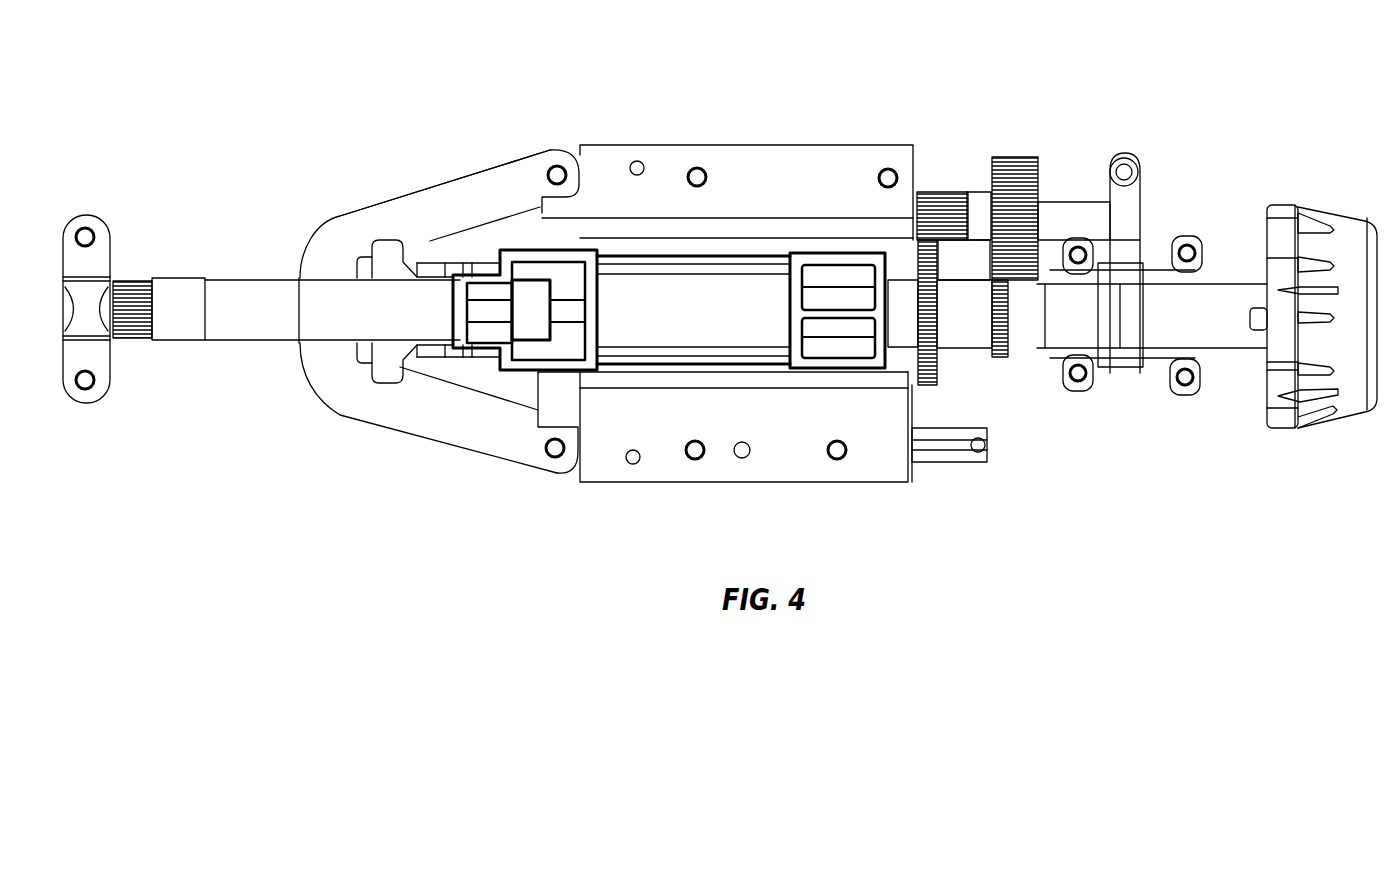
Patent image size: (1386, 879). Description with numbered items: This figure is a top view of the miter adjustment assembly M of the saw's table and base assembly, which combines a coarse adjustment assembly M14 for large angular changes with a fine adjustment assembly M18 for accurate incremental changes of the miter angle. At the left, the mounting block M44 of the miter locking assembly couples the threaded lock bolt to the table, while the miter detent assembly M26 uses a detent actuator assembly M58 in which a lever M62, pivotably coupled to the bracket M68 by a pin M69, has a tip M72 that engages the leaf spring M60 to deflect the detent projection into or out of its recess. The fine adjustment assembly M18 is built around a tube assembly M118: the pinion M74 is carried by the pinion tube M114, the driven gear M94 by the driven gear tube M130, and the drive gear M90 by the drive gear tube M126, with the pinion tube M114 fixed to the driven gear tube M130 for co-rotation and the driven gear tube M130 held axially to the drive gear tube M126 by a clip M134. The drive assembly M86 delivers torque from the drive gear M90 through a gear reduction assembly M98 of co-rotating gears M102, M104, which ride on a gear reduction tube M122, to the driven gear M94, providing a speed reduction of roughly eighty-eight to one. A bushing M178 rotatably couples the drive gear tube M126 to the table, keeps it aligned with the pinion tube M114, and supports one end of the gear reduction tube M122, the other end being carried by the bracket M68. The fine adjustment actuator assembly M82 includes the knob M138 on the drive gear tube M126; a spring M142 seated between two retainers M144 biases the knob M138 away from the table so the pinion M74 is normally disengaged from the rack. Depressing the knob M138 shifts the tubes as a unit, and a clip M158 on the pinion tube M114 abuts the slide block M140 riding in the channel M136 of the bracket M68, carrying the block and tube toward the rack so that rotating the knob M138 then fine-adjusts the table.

The miter adjustment assembly M is at (1122, 38).
The mounting block M44 is at (95, 258).
The pinion M74 is at (165, 332).
The pinion tube M114 is at (270, 280).
The tube assembly M118 is at (270, 360).
The miter detent assembly M26 is at (350, 430).
The detent actuator assembly M58 is at (487, 248).
The leaf spring M60 is at (407, 187).
The lever M62 is at (457, 238).
The tip M72 is at (378, 380).
The coarse adjustment assembly M14 is at (508, 480).
The pin M69 is at (690, 272).
The bracket M68 is at (713, 483).
The slide block M140 is at (762, 340).
The channel M136 is at (615, 374).
The clip M158 is at (900, 262).
The co-rotating gear M104 is at (940, 192).
The driven gear M94 is at (930, 388).
The gear reduction assembly M98 is at (975, 130).
The drive assembly M86 is at (1018, 123).
The co-rotating gear M102 is at (1033, 157).
The drive gear M90 is at (1000, 350).
The driven gear tube M130 is at (975, 365).
The gear reduction tube M122 is at (1073, 203).
The bushing M178 is at (1128, 217).
The drive gear tube M126 is at (1240, 293).
The clip M134 is at (1037, 362).
The spring M142 is at (1122, 386).
The retainer M144 is at (1132, 390).
The fine adjustment assembly M18 is at (1053, 430).
The fine adjustment actuator assembly M82 is at (1313, 182).
The knob M138 is at (1330, 414).